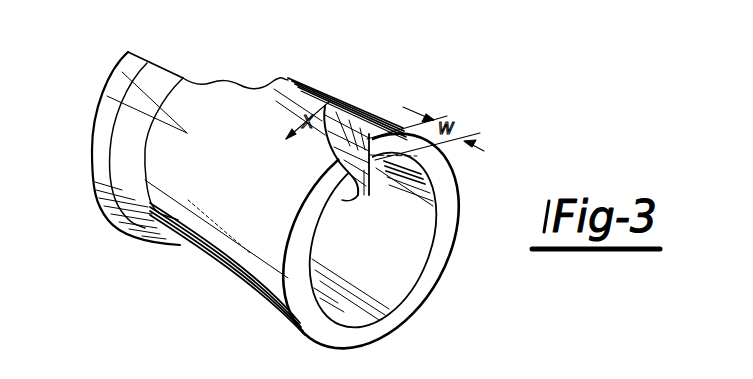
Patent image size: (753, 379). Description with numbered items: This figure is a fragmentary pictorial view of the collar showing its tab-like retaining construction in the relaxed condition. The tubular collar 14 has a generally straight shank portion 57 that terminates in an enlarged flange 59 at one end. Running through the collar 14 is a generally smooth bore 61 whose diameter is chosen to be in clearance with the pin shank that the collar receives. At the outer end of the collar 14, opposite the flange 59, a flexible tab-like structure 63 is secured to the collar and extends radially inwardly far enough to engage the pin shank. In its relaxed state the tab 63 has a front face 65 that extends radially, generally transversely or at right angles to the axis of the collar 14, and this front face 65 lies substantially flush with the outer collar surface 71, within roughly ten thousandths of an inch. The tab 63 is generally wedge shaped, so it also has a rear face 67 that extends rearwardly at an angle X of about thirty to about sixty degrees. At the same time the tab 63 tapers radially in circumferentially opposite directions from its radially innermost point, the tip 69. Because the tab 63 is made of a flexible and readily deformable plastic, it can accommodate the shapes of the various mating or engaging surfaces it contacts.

The tubular collar 14 is at (328, 80).
The shank portion 57 is at (328, 110).
The flange 59 is at (124, 69).
The bore 61 is at (404, 288).
The tab-like structure 63 is at (370, 190).
The front face 65 is at (436, 182).
The rear face 67 is at (343, 165).
The tip 69 is at (357, 188).
The outer collar surface 71 is at (447, 240).